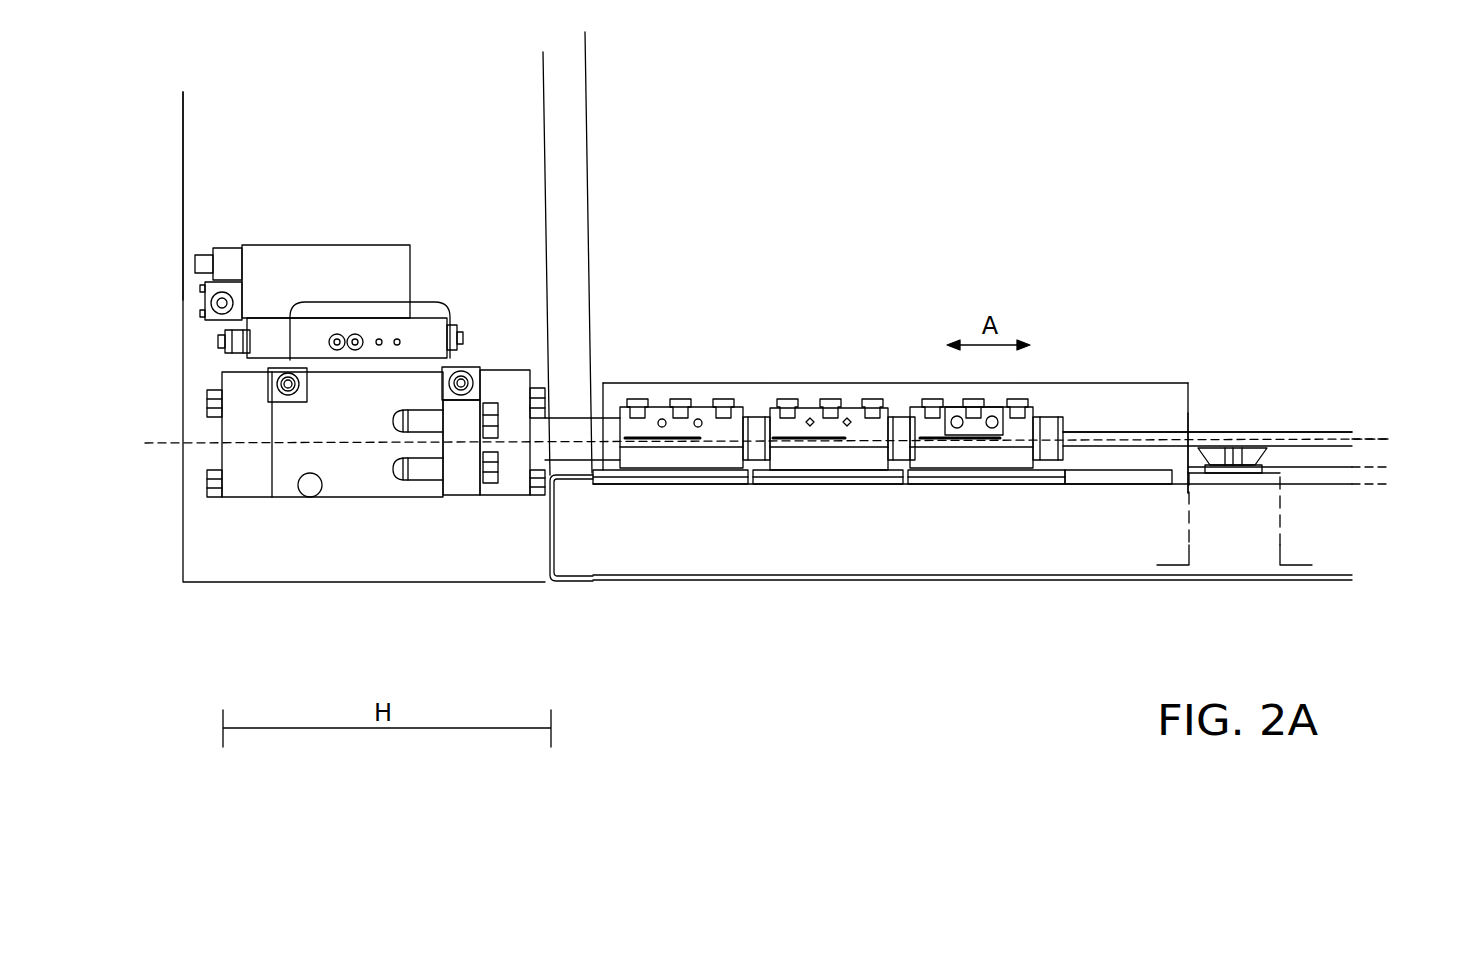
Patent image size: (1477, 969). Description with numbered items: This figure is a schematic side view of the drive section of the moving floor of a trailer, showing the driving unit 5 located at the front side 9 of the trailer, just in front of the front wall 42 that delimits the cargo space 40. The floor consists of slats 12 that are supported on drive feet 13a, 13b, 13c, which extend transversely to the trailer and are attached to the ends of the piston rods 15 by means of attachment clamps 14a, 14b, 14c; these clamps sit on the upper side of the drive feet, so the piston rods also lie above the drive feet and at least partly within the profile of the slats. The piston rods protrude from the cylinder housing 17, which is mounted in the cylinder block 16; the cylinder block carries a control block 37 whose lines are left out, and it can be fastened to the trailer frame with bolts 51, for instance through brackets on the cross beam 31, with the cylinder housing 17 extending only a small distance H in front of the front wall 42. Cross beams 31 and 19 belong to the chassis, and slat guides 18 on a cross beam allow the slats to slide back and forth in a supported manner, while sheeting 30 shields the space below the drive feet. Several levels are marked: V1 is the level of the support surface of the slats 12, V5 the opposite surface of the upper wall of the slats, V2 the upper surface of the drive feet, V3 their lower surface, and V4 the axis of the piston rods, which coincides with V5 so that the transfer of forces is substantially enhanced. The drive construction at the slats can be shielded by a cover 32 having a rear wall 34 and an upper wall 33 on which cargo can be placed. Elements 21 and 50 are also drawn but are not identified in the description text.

The driving unit 5 is at (376, 507).
The front side 9 is at (183, 553).
The slats 12 is at (1100, 455).
The drive foot 13a is at (1032, 475).
The drive foot 13b is at (798, 473).
The drive foot 13c is at (680, 457).
The attachment clamp 14a is at (975, 457).
The attachment clamp 14b is at (828, 457).
The attachment clamp 14c is at (698, 480).
The piston rod 15 is at (532, 440).
The cylinder block 16 is at (356, 243).
The cylinder housing 17 is at (360, 472).
The slat guide 18 is at (1260, 448).
The cross beam 19 is at (1190, 548).
The frame plate 21 is at (183, 180).
The sheeting 30 is at (868, 577).
The cross beam 31 is at (555, 555).
The cover 32 is at (867, 382).
The upper wall 33 is at (1115, 385).
The rear wall 34 is at (1190, 413).
The control block 37 is at (387, 258).
The cargo space 40 is at (875, 146).
The front wall 42 is at (563, 205).
The drive rod 50 is at (1127, 443).
The bolts 51 is at (423, 418).
The level of the support surface of the slats V1 is at (1218, 432).
The upper surface of the drive feet V2 is at (1385, 468).
The lower surface of the drive feet V3 is at (1385, 485).
The axis of the piston rods V4 is at (752, 443).
The opposite surface of the upper wall of the slats V5 is at (1383, 441).